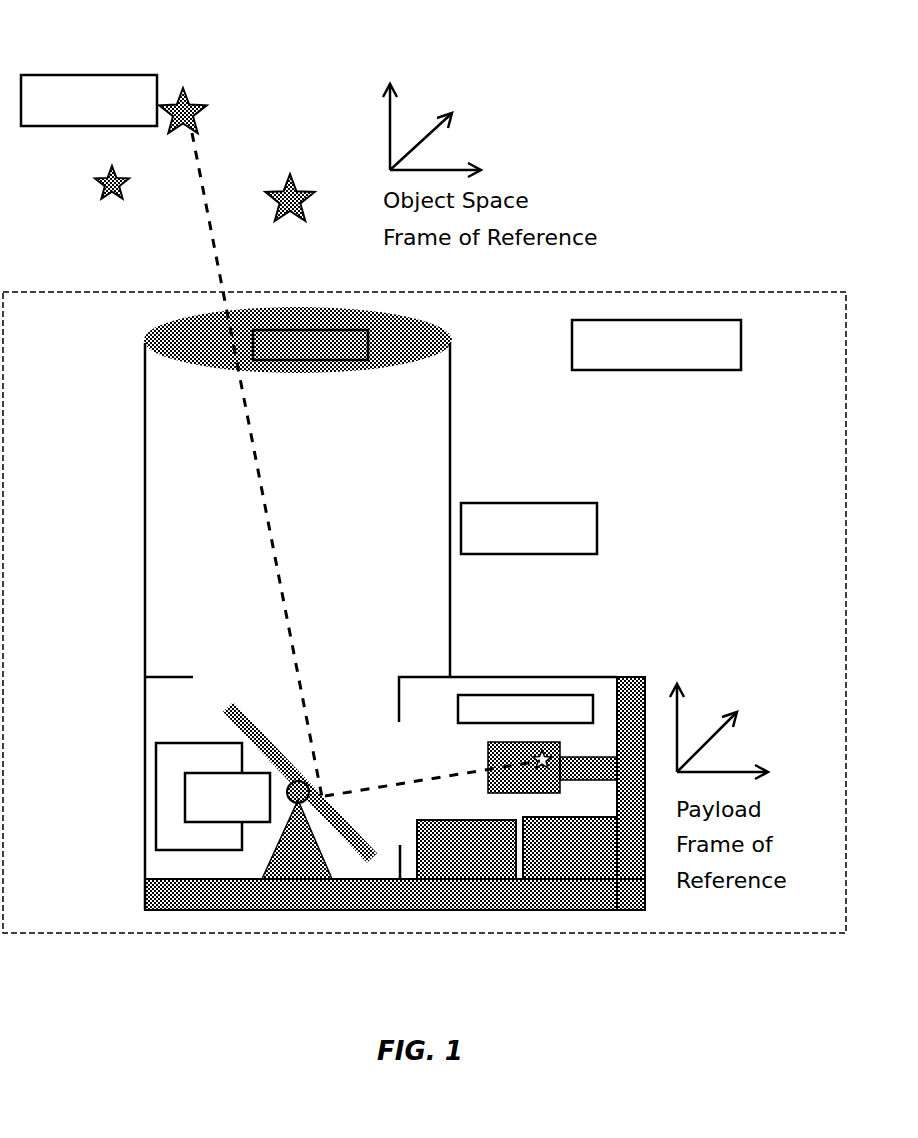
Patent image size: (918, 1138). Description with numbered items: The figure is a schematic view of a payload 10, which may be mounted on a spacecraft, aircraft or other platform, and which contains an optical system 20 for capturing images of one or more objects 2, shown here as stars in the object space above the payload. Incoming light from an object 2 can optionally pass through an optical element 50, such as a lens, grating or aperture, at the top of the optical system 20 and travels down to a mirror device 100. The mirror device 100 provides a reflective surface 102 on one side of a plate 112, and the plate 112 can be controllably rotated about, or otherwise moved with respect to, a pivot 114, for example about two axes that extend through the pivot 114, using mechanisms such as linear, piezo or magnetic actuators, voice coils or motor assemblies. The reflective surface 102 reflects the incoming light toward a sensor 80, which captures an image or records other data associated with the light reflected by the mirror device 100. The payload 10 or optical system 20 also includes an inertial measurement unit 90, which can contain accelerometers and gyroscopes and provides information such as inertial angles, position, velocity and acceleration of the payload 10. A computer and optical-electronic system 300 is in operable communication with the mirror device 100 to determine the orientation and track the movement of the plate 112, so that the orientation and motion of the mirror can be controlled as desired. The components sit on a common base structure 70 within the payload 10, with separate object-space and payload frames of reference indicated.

The object 2 is at (195, 108).
The payload 10 is at (742, 290).
The optical system 20 is at (146, 528).
The optical element 50 is at (392, 338).
The optical bench / base structure 70 is at (443, 895).
The sensor 80 is at (539, 747).
The inertial measurement unit 90 is at (570, 848).
The mirror device 100 is at (295, 865).
The reflective surface 102 is at (237, 710).
The plate 112 is at (240, 732).
The pivot 114 is at (292, 791).
The computer and optical-electronic system 300 is at (466, 849).